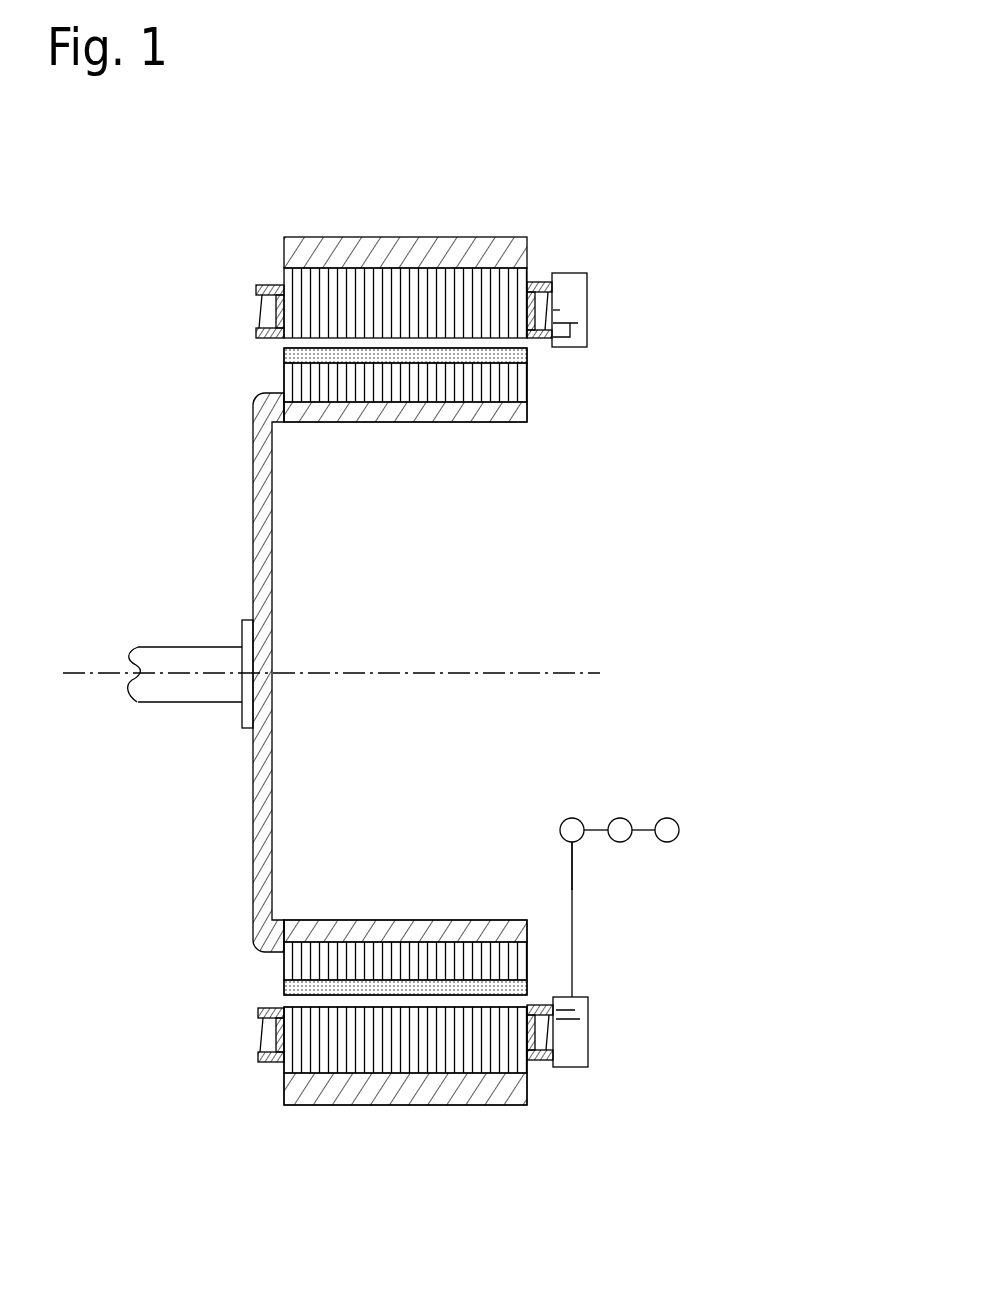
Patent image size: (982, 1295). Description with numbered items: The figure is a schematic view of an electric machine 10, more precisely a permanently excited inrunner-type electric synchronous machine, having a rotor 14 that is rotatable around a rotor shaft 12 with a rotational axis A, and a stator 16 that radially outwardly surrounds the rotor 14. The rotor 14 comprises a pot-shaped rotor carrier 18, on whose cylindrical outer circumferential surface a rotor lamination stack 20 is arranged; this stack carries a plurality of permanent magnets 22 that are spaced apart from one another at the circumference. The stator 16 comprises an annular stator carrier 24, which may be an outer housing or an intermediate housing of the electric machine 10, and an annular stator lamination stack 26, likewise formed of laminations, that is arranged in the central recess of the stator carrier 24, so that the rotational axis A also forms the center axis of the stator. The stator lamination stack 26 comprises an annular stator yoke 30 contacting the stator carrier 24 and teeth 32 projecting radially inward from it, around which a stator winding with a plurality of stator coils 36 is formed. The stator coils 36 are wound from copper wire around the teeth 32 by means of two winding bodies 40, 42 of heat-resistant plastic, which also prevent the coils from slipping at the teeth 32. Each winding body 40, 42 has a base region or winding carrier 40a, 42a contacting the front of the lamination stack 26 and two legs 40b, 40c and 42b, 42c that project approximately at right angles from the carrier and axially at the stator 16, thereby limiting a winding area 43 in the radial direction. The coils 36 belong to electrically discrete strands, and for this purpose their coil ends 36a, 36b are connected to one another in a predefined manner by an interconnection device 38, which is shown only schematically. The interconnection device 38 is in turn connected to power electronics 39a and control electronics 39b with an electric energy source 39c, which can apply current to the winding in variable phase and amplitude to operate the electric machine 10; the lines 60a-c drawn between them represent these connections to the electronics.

The electric machine 10 is at (190, 975).
The rotor shaft 12 is at (168, 647).
The rotational axis A is at (78, 678).
The rotor 14 is at (222, 500).
The stator 16 is at (548, 200).
The rotor carrier 18 is at (253, 878).
The rotor lamination stack 20 is at (284, 378).
The permanent magnets 22 is at (284, 352).
The stator carrier 24 is at (478, 238).
The stator lamination stack 26 is at (268, 1076).
The stator yoke 30 is at (545, 282).
The teeth 32 is at (460, 338).
The stator coils 36 is at (550, 1065).
The coil end 36a is at (563, 338).
The coil end 36b is at (583, 340).
The interconnection device 38 is at (615, 318).
The power electronics 39a is at (572, 830).
The control electronics 39b is at (620, 830).
The electric energy source 39c is at (666, 830).
The winding body 40 is at (535, 308).
The winding carrier 40a is at (558, 292).
The leg 40b is at (535, 338).
The leg 40c is at (527, 268).
The winding body 42 is at (263, 272).
The winding carrier 42a is at (257, 310).
The leg 42b is at (255, 330).
The leg 42c is at (262, 314).
The winding area 43 is at (263, 1040).
The signal lines 60a-c is at (573, 890).